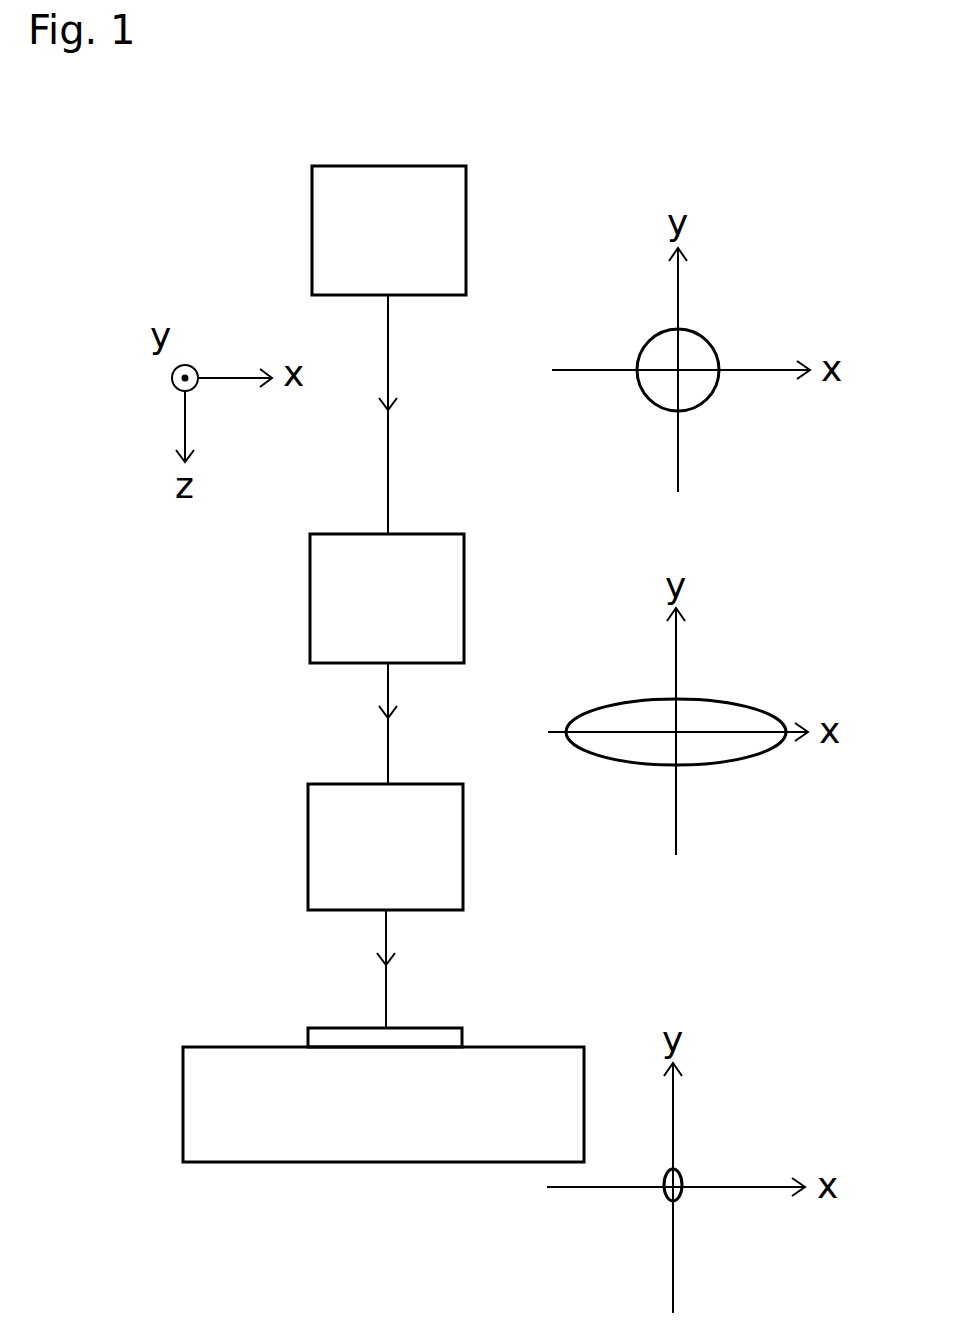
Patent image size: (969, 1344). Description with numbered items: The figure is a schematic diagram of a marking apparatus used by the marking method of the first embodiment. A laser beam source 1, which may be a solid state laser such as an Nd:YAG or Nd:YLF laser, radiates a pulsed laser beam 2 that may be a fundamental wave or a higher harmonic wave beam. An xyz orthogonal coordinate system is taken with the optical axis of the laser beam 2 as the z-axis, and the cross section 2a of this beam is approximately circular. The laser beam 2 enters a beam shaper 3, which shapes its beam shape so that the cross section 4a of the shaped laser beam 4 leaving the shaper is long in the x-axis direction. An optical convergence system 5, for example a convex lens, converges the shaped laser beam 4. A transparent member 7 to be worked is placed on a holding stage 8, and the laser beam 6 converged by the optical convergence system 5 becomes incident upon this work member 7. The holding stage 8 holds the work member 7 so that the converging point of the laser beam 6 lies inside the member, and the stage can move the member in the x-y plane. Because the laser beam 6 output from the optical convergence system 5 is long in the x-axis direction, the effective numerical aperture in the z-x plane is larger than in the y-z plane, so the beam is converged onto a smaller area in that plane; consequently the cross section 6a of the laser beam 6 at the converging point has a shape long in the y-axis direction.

The laser beam source 1 is at (466, 197).
The laser beam 2 is at (388, 450).
The cross section 2a is at (711, 340).
The beam shaper 3 is at (464, 625).
The shaped laser beam 4 is at (388, 744).
The cross section 4a is at (735, 702).
The optical convergence system 5 is at (463, 812).
The laser beam 6 is at (386, 940).
The cross section 6a is at (682, 1178).
The transparent member 7 is at (307, 1040).
The holding stage 8 is at (183, 1127).